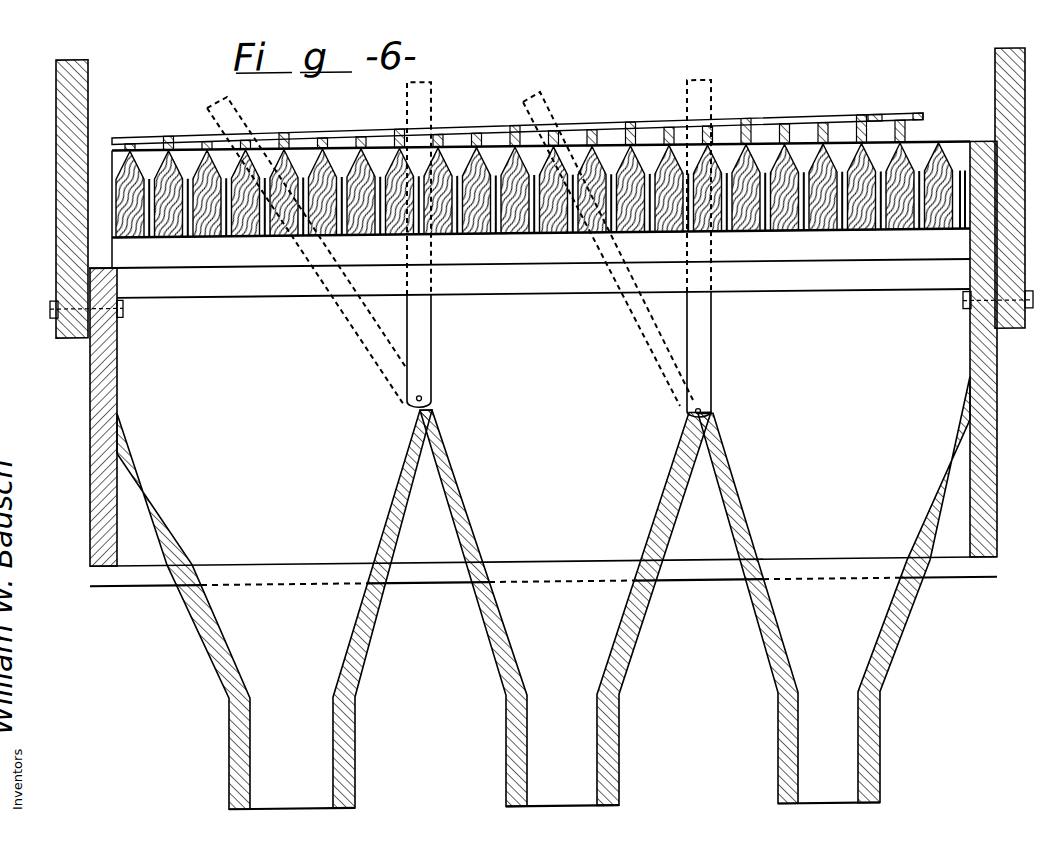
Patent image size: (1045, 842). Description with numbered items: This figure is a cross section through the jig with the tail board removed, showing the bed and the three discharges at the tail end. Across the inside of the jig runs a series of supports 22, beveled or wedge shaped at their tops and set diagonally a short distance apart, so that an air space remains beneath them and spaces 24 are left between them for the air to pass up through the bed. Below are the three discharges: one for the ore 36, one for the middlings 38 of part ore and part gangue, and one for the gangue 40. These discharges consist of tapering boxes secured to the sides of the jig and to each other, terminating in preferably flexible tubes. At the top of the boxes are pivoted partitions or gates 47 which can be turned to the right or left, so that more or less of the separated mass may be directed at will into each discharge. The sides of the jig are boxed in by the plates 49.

The supports 22 is at (475, 233).
The spaces 24 is at (253, 233).
The ore discharge 36 is at (274, 610).
The middlings discharge 38 is at (565, 607).
The gangue discharge 40 is at (834, 591).
The pivoted partitions or gates 47 is at (431, 334).
The side plates 49 is at (88, 108).